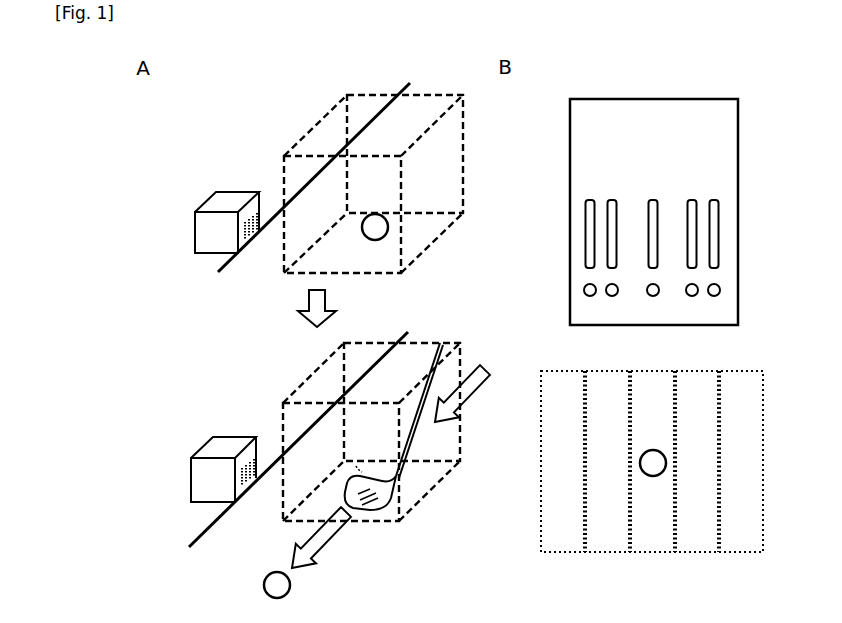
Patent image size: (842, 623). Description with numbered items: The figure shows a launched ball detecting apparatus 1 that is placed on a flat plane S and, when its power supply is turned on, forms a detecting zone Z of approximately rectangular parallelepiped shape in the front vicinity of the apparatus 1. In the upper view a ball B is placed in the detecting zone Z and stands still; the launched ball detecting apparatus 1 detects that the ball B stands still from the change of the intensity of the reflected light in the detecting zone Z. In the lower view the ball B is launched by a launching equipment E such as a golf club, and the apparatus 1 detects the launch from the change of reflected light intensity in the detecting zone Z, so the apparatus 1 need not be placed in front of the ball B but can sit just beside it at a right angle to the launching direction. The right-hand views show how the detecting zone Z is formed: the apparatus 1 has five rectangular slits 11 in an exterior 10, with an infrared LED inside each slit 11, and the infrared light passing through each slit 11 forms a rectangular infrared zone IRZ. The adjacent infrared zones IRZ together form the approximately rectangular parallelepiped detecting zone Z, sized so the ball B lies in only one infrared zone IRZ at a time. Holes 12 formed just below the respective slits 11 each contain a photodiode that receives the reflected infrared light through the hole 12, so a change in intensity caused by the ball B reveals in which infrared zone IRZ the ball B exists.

In FIG. 1A, the launched ball detecting apparatus 1 is at (193, 187).
In FIG. 1B, the launched ball detecting apparatus 1 is at (647, 212).
In FIG. 1B, the exterior 10 is at (720, 158).
In FIG. 1B, the rectangular slits 11 is at (717, 238).
In FIG. 1B, the holes 12 is at (720, 288).
In FIG. 1A, the detecting zone Z is at (308, 125).
In FIG. 1B, the detecting zone Z is at (658, 468).
In FIG. 1B, the infrared zone IRZ is at (744, 370).
In FIG. 1A, the flat plane S is at (303, 205).
In FIG. 1A, the ball B is at (387, 238).
In FIG. 1B, the ball B is at (666, 466).
In FIG. 1A, the launching equipment E is at (407, 448).